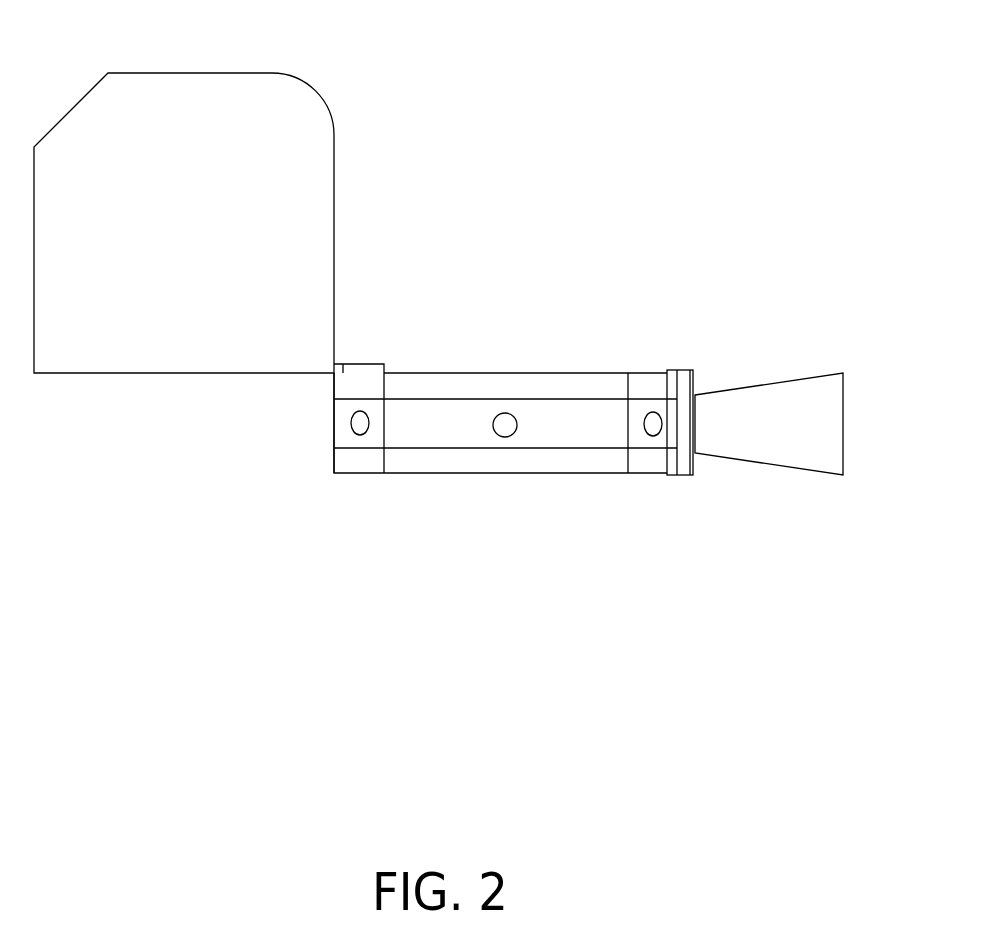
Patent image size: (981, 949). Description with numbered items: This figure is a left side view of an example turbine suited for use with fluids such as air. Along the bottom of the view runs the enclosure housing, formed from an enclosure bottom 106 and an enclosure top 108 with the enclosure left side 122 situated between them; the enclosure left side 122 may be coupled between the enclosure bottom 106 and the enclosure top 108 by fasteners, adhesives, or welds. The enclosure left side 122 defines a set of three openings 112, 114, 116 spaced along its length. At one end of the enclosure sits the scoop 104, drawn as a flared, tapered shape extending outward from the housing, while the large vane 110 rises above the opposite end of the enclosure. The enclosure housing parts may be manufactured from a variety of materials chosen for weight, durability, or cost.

The scoop 104 is at (847, 373).
The enclosure bottom 106 is at (415, 473).
The enclosure top 108 is at (545, 373).
The vane 110 is at (193, 73).
The opening 112 is at (352, 441).
The opening 114 is at (502, 442).
The opening 116 is at (648, 443).
The enclosure left side 122 is at (334, 428).